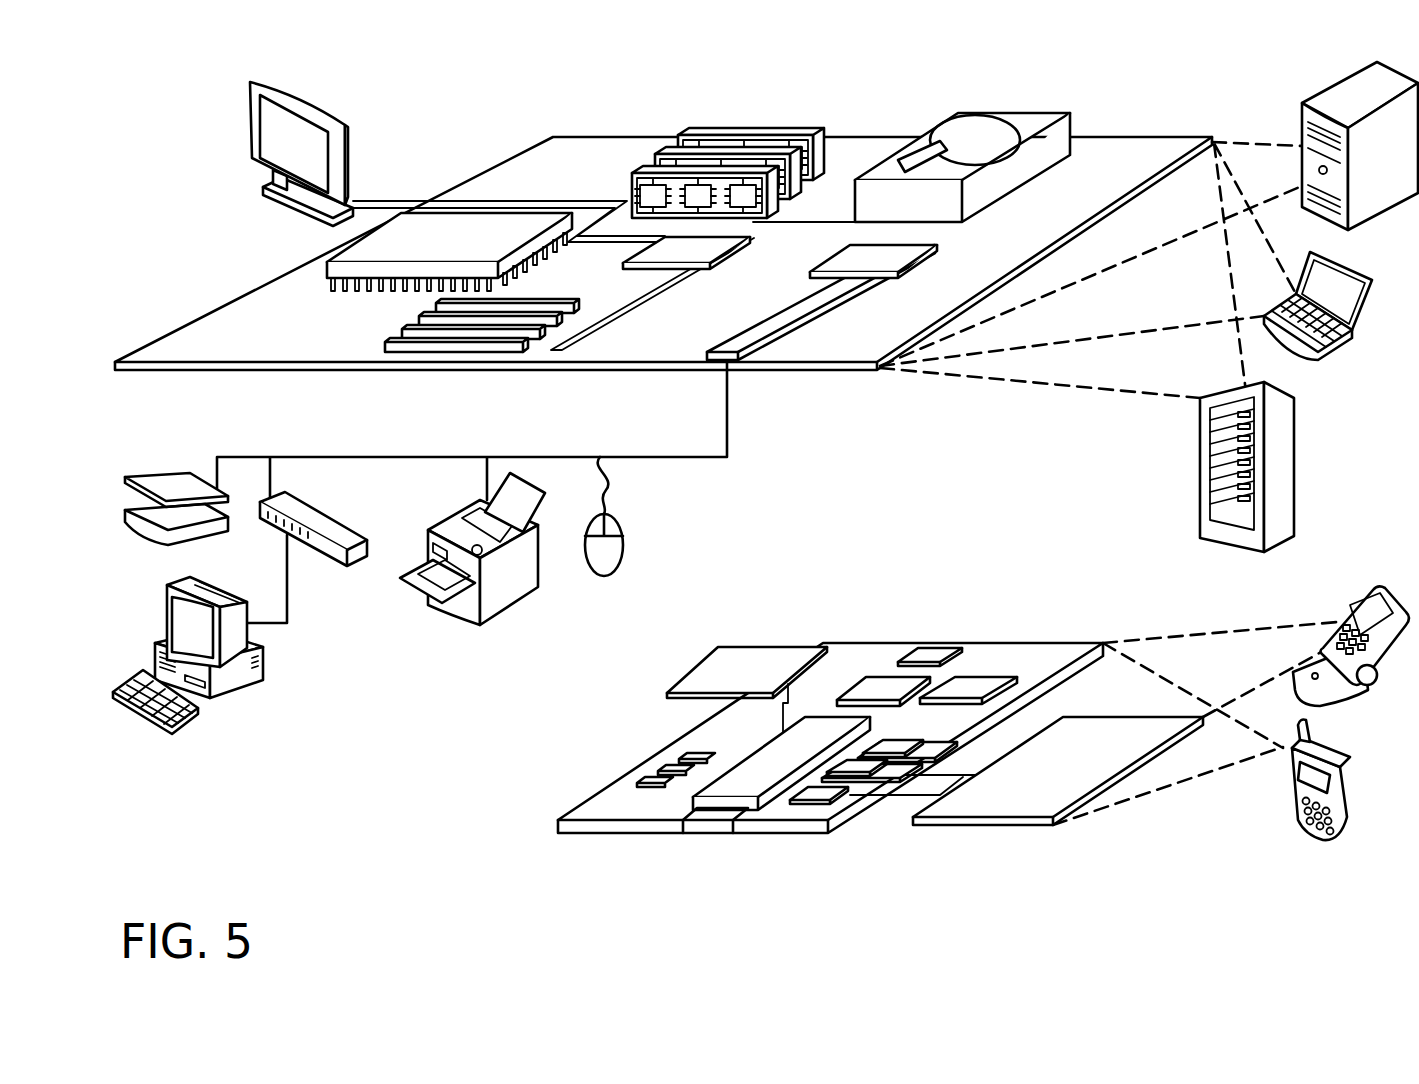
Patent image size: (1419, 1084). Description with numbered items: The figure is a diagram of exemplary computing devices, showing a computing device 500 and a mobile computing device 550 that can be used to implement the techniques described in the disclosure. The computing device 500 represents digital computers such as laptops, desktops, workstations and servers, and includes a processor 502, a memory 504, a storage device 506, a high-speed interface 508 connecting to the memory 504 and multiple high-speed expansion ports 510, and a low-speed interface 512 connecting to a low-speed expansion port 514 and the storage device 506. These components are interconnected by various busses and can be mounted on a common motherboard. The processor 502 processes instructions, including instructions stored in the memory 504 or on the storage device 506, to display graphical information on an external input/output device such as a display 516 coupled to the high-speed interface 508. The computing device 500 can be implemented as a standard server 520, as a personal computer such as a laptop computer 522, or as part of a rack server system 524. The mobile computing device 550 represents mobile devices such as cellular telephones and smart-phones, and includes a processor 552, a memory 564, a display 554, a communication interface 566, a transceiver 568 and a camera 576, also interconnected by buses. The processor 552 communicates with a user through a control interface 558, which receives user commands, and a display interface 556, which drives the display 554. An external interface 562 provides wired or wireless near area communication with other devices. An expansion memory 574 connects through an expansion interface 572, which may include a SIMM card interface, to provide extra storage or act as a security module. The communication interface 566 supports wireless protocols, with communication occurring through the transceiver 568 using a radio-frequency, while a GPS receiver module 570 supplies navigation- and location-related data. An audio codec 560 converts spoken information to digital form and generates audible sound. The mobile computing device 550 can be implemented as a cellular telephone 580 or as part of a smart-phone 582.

The computing device 500 is at (471, 104).
The processor 502 is at (327, 268).
The memory 504 is at (710, 135).
The storage device 506 is at (958, 118).
The high-speed interface 508 is at (660, 250).
The high-speed expansion ports 510 is at (405, 335).
The low-speed interface 512 is at (853, 253).
The low-speed expansion port 514 is at (745, 365).
The display 516 is at (252, 82).
The standard server 520 is at (1302, 122).
The laptop computer 522 is at (1322, 362).
The rack server system 524 is at (1200, 492).
The mobile computing device 550 is at (528, 832).
The processor 552 is at (752, 787).
The display 554 is at (1013, 807).
The display interface 556 is at (828, 800).
The control interface 558 is at (868, 778).
The audio codec 560 is at (890, 757).
The external interface 562 is at (710, 826).
The memory 564 is at (655, 783).
The communication interface 566 is at (882, 683).
The transceiver 568 is at (968, 688).
The GPS receiver module 570 is at (940, 648).
The expansion interface 572 is at (825, 650).
The expansion memory 574 is at (725, 660).
The camera 576 is at (1312, 762).
The cellular telephone 580 is at (1342, 598).
The smart-phone 582 is at (1301, 778).